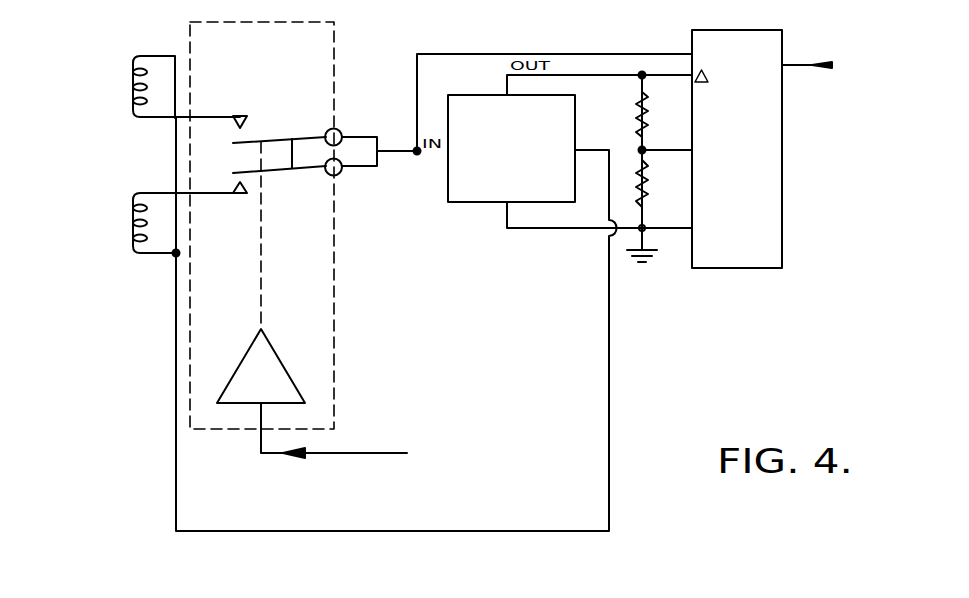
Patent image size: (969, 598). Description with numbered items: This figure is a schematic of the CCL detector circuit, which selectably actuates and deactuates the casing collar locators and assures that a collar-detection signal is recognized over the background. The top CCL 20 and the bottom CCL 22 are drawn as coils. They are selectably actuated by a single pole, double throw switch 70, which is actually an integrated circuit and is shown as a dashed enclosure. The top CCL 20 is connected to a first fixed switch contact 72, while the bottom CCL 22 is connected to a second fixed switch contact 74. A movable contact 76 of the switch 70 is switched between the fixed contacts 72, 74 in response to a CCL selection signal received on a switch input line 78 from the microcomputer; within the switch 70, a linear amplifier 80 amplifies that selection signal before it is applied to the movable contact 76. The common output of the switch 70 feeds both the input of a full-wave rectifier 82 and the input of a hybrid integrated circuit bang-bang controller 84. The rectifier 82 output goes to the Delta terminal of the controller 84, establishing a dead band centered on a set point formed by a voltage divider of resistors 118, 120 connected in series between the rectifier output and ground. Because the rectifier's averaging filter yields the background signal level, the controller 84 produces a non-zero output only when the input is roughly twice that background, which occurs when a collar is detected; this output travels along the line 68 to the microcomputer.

The top CCL 20 is at (147, 55).
The bottom CCL 22 is at (148, 256).
The line 68 is at (795, 70).
The single pole, double throw switch 70 is at (334, 345).
The first fixed switch contact 72 is at (245, 115).
The second fixed switch contact 74 is at (240, 195).
The movable contact 76 is at (288, 138).
The switch input line 78 is at (348, 452).
The linear amplifier 80 is at (279, 351).
The full-wave rectifier 82 is at (473, 206).
The controller 84 is at (740, 269).
The resistor 118 is at (636, 107).
The resistor 120 is at (650, 193).